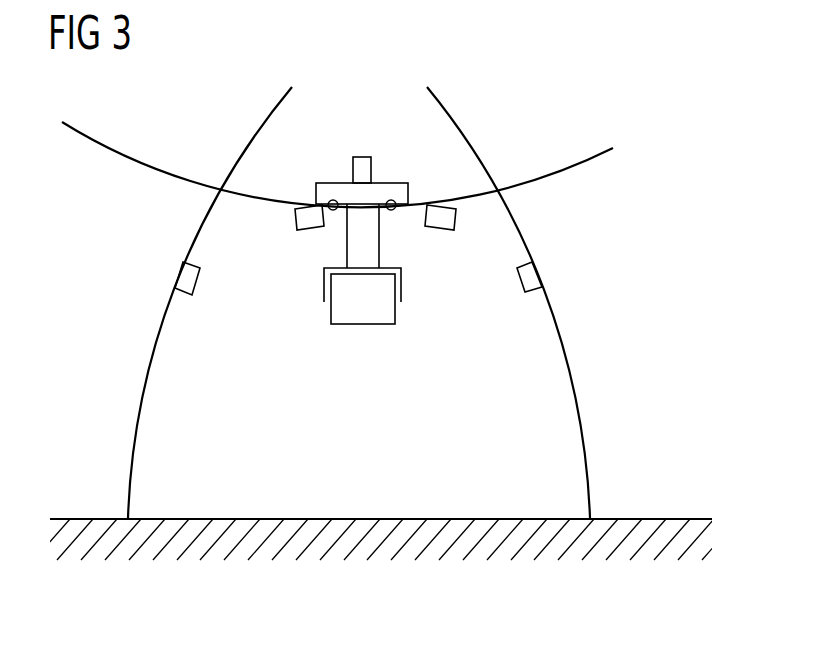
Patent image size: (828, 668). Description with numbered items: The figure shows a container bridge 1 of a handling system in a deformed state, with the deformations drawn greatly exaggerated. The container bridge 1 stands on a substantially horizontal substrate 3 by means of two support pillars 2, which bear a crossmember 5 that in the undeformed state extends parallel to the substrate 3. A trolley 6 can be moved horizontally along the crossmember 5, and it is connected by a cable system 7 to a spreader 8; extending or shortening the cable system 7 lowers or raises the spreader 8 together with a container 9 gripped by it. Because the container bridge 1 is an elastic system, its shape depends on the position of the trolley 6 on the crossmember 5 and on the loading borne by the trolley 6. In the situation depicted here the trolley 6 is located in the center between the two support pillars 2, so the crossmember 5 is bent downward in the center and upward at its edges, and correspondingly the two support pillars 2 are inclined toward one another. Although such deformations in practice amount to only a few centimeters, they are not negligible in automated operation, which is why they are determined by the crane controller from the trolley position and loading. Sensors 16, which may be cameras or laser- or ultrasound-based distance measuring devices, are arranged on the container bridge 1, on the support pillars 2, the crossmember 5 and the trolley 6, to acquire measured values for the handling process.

The container bridge 1 is at (566, 68).
The support pillars 2 is at (253, 132).
The substrate 3 is at (92, 518).
The crossmember 5 is at (138, 167).
The trolley 6 is at (327, 180).
The cable system 7 is at (348, 223).
The spreader 8 is at (401, 290).
The container 9 is at (357, 325).
The sensors 16 is at (360, 155).